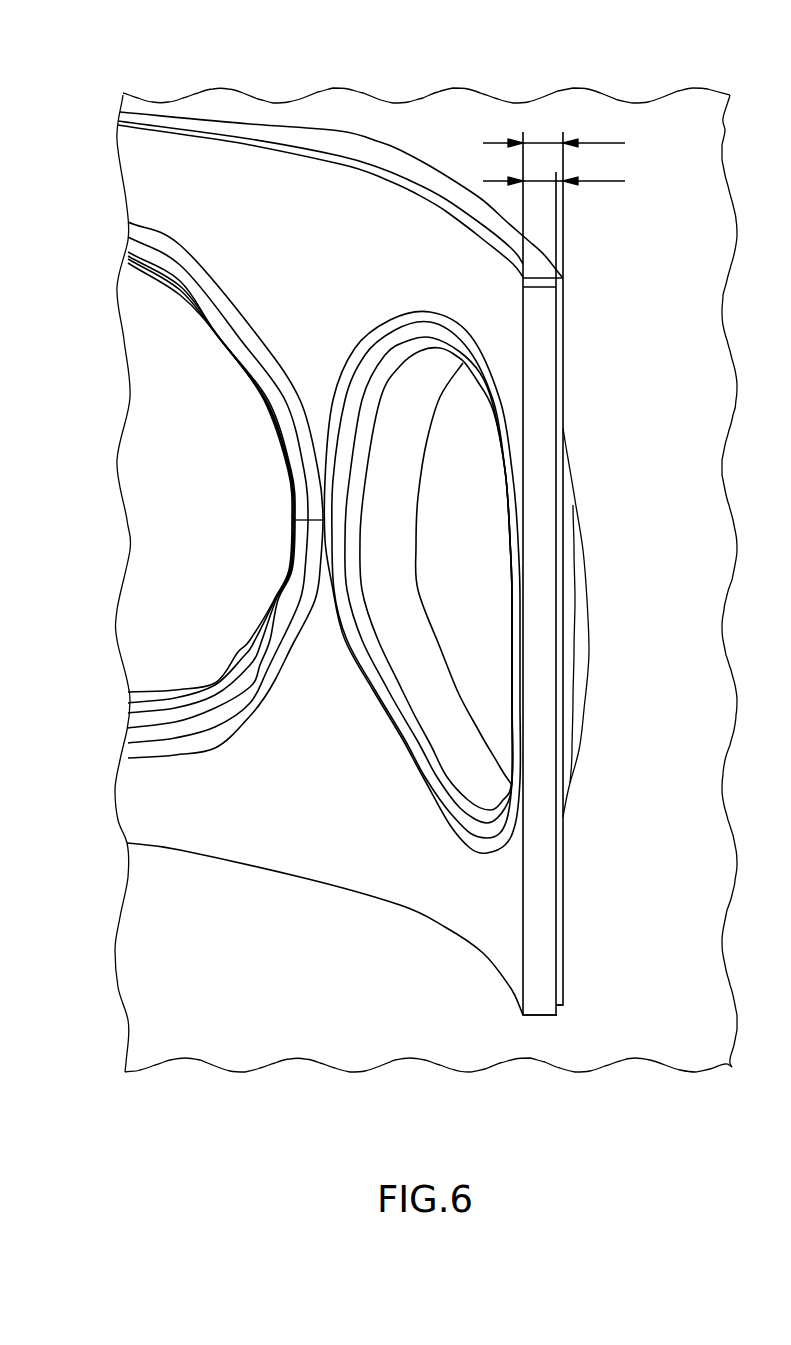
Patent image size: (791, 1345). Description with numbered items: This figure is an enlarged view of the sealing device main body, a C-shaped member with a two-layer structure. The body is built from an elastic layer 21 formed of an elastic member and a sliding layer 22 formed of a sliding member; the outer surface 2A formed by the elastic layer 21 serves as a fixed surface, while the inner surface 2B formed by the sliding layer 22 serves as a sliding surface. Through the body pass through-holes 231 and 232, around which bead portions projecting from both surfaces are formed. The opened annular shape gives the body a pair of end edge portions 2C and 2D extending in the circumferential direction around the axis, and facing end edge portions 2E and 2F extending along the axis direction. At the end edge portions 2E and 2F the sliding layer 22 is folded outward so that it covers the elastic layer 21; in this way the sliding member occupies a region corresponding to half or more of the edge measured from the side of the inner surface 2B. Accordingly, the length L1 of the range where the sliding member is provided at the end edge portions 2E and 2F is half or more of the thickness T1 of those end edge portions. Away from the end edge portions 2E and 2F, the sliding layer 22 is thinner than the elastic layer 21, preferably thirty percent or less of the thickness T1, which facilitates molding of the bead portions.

The outer surface 2A is at (400, 150).
The inner surface 2B is at (223, 172).
The end edge portion 2C is at (315, 138).
The end edge portion 2D is at (232, 858).
The end edge portion 2E is at (540, 363).
The end edge portion 2F is at (560, 313).
The elastic layer 21 is at (562, 993).
The sliding layer 22 is at (540, 1005).
The through-hole 231 is at (462, 757).
The through-hole 232 is at (142, 703).
The length of the range where the sliding member is provided L1 is at (554, 128).
The thickness of the end edge portions T1 is at (554, 167).